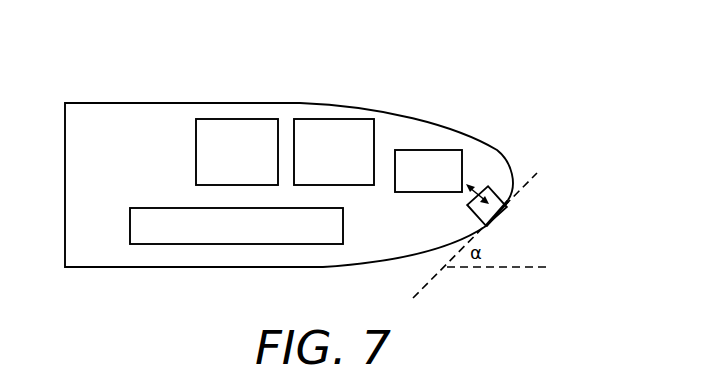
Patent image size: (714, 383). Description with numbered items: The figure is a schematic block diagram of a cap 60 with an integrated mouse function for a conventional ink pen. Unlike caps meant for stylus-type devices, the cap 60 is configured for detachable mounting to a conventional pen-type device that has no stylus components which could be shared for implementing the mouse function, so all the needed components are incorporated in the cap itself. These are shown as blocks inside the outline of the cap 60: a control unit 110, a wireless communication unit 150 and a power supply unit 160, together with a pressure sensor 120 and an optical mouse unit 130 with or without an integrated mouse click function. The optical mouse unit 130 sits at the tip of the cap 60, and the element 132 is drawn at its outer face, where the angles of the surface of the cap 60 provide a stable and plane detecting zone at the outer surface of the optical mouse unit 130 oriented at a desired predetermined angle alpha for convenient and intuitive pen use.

The cap 60 is at (91, 64).
The control unit 110 is at (249, 237).
The pressure sensor 120 is at (409, 181).
The optical mouse unit 130 is at (504, 200).
The transducer emitting surface 132 is at (499, 211).
The wireless communication unit 150 is at (217, 177).
The power supply unit 160 is at (314, 177).